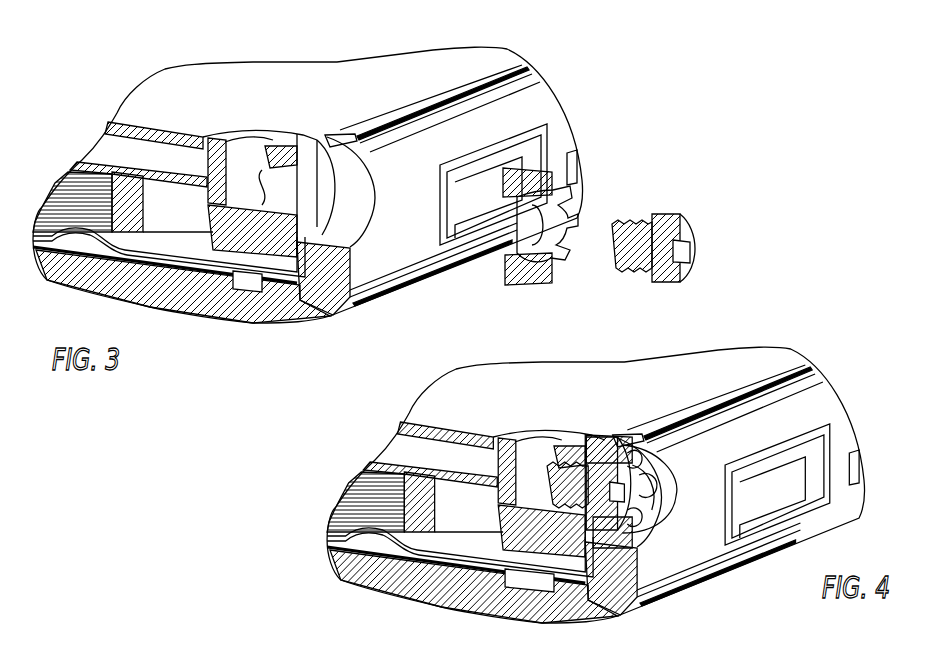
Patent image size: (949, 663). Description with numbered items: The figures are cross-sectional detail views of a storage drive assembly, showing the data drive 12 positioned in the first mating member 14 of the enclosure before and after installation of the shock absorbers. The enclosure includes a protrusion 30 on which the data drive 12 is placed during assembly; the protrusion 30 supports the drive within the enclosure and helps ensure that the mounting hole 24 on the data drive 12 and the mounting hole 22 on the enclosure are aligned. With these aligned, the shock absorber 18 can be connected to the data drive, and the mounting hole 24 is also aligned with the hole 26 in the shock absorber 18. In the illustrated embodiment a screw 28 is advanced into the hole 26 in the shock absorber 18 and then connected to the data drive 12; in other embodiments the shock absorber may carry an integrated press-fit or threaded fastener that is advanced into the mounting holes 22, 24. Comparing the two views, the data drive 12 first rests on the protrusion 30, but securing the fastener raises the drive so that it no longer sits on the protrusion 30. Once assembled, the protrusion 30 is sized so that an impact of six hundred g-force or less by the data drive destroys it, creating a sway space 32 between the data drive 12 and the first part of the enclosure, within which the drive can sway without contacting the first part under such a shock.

In FIG. 3, the data drive 12 is at (302, 105).
In FIG. 4, the data drive 12 is at (595, 470).
In FIG. 3, the first mating member 14 is at (535, 100).
In FIG. 4, the first mating member 14 is at (802, 456).
In FIG. 3, the shock absorber 18 is at (515, 288).
In FIG. 4, the shock absorber 18 is at (672, 514).
In FIG. 3, the mounting hole 22 is at (353, 258).
In FIG. 4, the mounting hole 22 is at (563, 518).
In FIG. 3, the mounting hole 24 is at (278, 152).
In FIG. 4, the mounting hole 24 is at (548, 446).
In FIG. 3, the hole 26 is at (566, 215).
In FIG. 4, the hole 26 is at (706, 513).
In FIG. 3, the screw 28 is at (682, 220).
In FIG. 4, the screw 28 is at (589, 431).
In FIG. 3, the protrusion 30 is at (258, 300).
In FIG. 4, the protrusion 30 is at (474, 593).
In FIG. 3, the sway space 32 is at (82, 280).
In FIG. 4, the sway space 32 is at (460, 567).